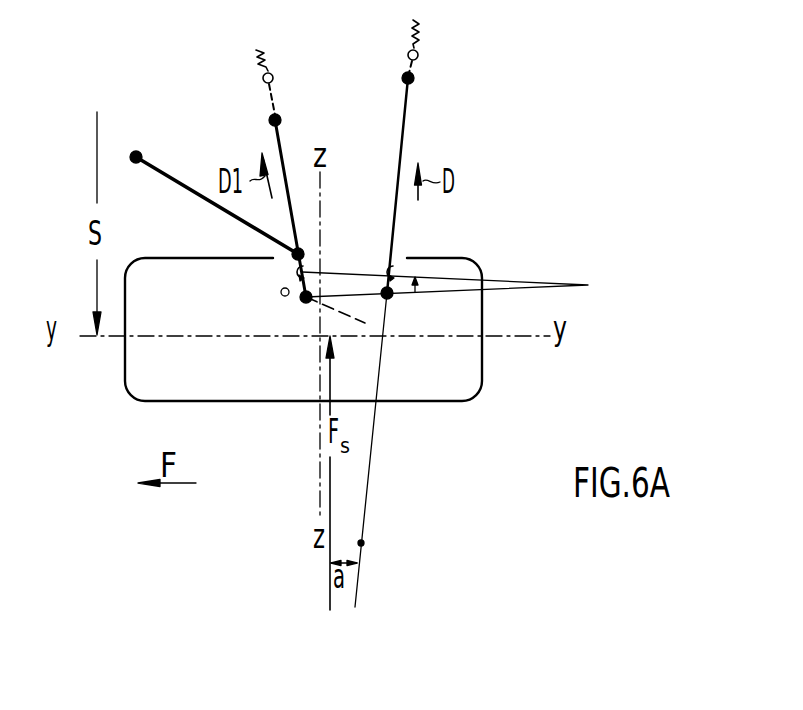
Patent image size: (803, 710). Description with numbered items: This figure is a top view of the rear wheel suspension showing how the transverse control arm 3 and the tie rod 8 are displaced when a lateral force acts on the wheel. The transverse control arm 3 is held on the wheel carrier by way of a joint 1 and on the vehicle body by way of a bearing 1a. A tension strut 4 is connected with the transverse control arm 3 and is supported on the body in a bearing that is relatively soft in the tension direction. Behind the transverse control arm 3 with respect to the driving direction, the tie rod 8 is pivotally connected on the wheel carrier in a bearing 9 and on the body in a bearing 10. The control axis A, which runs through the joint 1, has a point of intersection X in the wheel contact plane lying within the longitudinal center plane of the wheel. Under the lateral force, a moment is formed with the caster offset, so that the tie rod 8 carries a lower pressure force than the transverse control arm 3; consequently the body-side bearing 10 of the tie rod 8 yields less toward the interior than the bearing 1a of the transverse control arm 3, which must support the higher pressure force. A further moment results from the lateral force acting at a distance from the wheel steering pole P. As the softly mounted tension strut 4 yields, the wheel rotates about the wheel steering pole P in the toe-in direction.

The joint 1 is at (304, 302).
The bearing 1a is at (280, 114).
The transverse control arm 3 is at (285, 157).
The tension strut 4 is at (167, 175).
The tie rod 8 is at (407, 127).
The bearing 9 is at (392, 298).
The bearing 10 is at (415, 74).
The control axis A is at (349, 318).
The point of intersection X is at (281, 292).
The wheel steering pole P is at (364, 542).